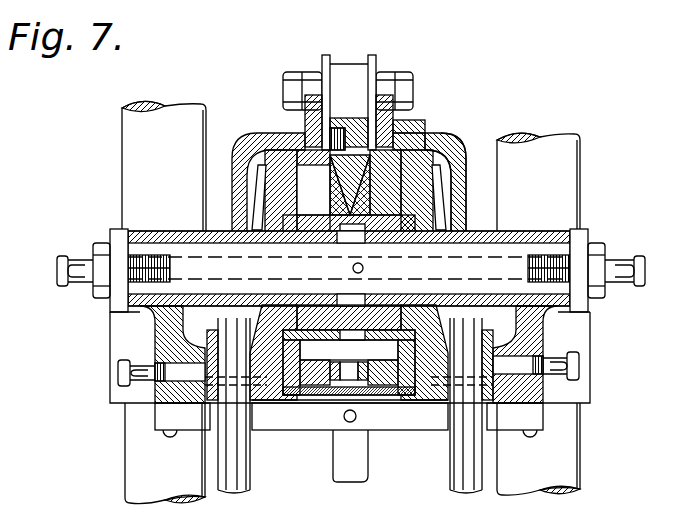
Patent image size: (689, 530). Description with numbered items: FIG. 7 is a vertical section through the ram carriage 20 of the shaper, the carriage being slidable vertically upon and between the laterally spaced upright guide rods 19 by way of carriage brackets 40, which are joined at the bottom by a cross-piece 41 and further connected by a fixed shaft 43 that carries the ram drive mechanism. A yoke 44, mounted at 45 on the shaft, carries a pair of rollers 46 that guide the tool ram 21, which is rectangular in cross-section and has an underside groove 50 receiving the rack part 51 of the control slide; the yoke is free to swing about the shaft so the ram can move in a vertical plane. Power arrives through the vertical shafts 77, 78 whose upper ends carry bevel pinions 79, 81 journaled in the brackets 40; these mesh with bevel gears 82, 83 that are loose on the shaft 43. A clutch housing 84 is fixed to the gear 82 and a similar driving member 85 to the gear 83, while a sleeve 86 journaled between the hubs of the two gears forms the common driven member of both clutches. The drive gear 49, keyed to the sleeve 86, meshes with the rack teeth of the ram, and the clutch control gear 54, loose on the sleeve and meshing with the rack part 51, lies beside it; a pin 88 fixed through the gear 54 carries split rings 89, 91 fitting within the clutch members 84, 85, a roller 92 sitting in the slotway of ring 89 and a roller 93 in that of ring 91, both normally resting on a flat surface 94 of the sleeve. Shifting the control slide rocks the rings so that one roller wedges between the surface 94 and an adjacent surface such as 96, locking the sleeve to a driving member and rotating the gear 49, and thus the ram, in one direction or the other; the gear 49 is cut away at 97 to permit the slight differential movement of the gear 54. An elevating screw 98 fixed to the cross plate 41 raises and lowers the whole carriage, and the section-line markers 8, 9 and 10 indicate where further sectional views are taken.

The guide rods 19 is at (135, 157).
The clutch surface 96 is at (322, 144).
The yoke 44 is at (476, 137).
The bevel gear 82 is at (456, 160).
The drive gear 49 is at (418, 127).
The rollers 46 is at (353, 82).
The tool ram 21 is at (398, 128).
The groove 50 is at (334, 120).
The rack part of control slide 51 is at (328, 146).
The section line 9- 9 is at (362, 66).
The section line 10- 10 is at (330, 62).
The section line 8- 8 is at (326, 48).
The bevel gear 83 is at (262, 176).
The clutch driving member 85 is at (290, 176).
The clutch control gear 54 is at (329, 186).
The roller 93 is at (305, 205).
The flat surface 94 is at (337, 217).
The roller 92 is at (440, 210).
The clutch housing 84 is at (414, 172).
The sleeve 86 is at (383, 220).
The yoke mounting 45 is at (215, 232).
The fixed shaft 43 is at (548, 245).
The carriage brackets 40 is at (127, 330).
The ram carriage 20 is at (544, 333).
The bevel pinion 81 is at (128, 350).
The bevel pinion 79 is at (557, 340).
The shaft 78 is at (245, 492).
The shaft 77 is at (458, 450).
The split ring 91 is at (280, 393).
The cut-away 97 is at (377, 385).
The pin 88 is at (312, 352).
The split ring 89 is at (395, 388).
The cross-piece 41 is at (283, 405).
The elevating screw 98 is at (342, 467).